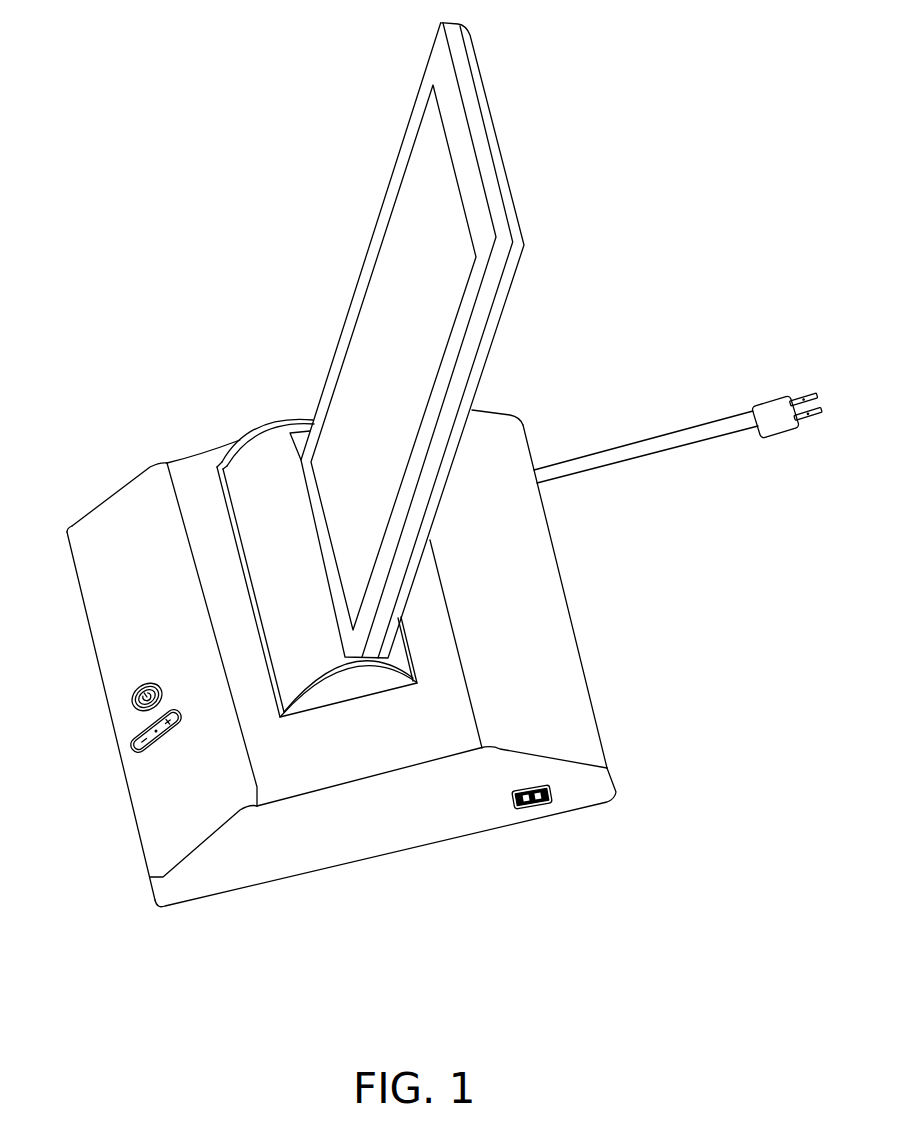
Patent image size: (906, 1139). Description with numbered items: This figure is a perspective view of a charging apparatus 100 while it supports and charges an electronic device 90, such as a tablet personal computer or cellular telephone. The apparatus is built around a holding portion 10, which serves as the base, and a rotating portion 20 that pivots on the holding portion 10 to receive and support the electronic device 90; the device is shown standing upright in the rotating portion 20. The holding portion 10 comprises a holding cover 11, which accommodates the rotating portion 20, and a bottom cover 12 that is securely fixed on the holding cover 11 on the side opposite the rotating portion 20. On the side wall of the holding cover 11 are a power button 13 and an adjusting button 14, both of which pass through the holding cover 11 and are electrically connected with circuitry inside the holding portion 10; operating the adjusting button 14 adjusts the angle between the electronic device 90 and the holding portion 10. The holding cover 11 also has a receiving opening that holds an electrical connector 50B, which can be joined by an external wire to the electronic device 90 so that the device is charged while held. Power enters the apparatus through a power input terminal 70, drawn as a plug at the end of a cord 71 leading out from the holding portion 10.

The charging apparatus 100 is at (210, 400).
The holding portion 10 is at (60, 745).
The holding cover 11 is at (255, 787).
The bottom cover 12 is at (212, 910).
The power button 13 is at (132, 694).
The adjusting button 14 is at (132, 736).
The rotating portion 20 is at (267, 470).
The electrical connector 50B is at (535, 806).
The power input terminal 70 is at (758, 417).
The cable 71 is at (638, 448).
The electronic device 90 is at (450, 197).